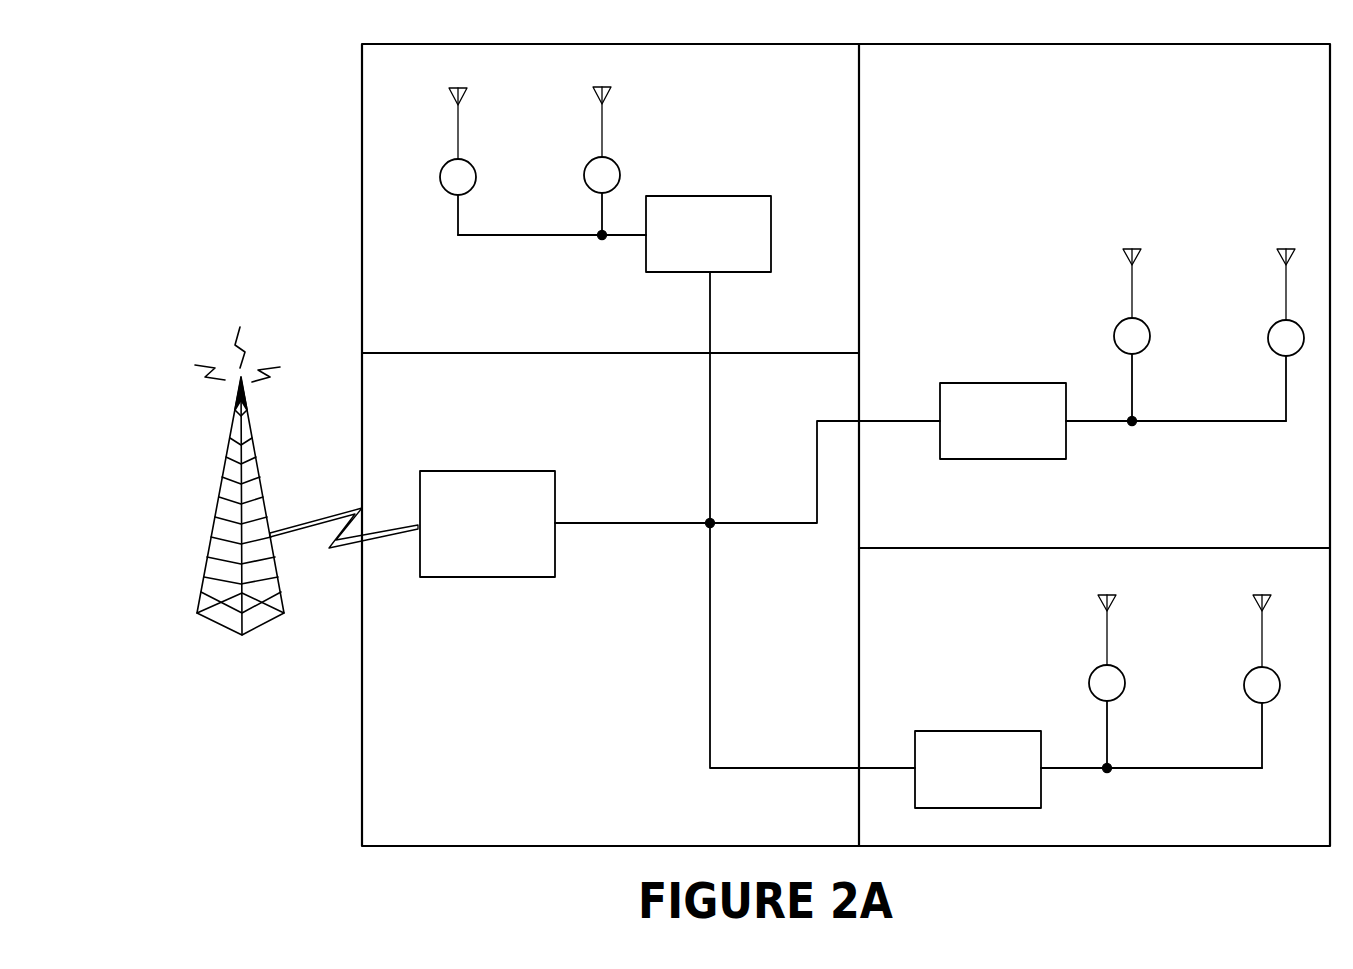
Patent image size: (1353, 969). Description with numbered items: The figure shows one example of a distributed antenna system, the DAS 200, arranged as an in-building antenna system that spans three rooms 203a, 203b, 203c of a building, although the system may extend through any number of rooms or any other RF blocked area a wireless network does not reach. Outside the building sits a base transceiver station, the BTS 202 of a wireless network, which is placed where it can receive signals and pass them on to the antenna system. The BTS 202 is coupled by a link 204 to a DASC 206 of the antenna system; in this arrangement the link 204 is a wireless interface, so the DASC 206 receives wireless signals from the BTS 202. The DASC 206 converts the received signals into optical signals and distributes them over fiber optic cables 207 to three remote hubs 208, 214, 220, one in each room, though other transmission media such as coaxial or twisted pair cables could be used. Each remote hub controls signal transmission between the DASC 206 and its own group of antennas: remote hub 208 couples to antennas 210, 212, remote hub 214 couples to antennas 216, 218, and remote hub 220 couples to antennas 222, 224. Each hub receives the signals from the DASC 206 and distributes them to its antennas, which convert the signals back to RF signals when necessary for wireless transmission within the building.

The distributed antenna system (DAS) 200 is at (290, 162).
The base transceiver station (BTS) 202 is at (226, 449).
The room 203a is at (848, 339).
The room 203b is at (1302, 92).
The room 203c is at (938, 587).
The link 204 is at (280, 533).
The DASC 206 is at (490, 471).
The fiber optic cables 207 is at (621, 523).
The remote hub 208 is at (742, 196).
The antenna 210 is at (590, 162).
The antenna 212 is at (446, 164).
The remote hub 214 is at (962, 383).
The antenna 216 is at (1120, 323).
The antenna 218 is at (1273, 326).
The remote hub 220 is at (937, 731).
The antenna 222 is at (1094, 669).
The antenna 224 is at (1249, 672).